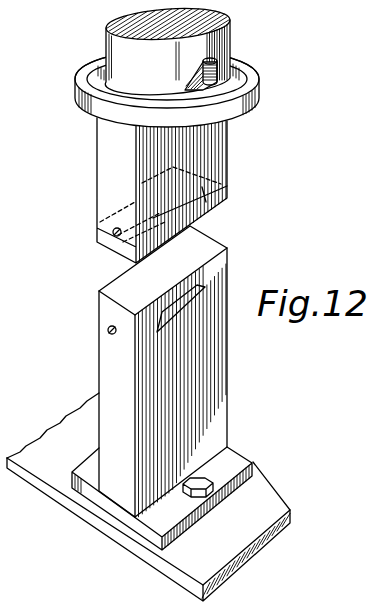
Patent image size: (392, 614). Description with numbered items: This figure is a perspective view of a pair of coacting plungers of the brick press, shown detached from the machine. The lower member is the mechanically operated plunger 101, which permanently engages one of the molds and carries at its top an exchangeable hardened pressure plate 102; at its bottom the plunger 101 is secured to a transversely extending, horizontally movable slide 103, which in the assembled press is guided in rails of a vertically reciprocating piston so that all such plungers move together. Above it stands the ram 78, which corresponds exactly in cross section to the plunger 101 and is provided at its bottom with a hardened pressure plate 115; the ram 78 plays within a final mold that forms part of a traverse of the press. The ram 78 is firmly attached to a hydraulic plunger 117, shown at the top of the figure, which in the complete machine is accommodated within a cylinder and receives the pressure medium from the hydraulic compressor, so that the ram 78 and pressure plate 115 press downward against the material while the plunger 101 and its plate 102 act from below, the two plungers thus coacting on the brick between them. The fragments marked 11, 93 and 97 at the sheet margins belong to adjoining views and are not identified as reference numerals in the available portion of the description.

The hydraulic plunger 117 is at (167, 66).
The ram 78 is at (187, 190).
The hardened pressure plate 115 is at (228, 193).
The exchangeable hardened pressure plate 102 is at (116, 289).
The mechanically operated plunger 101 is at (163, 388).
The slide 103 is at (148, 497).
The frame 11 is at (13, 568).
The element 93 is at (12, 5).
The element 97 is at (49, 5).